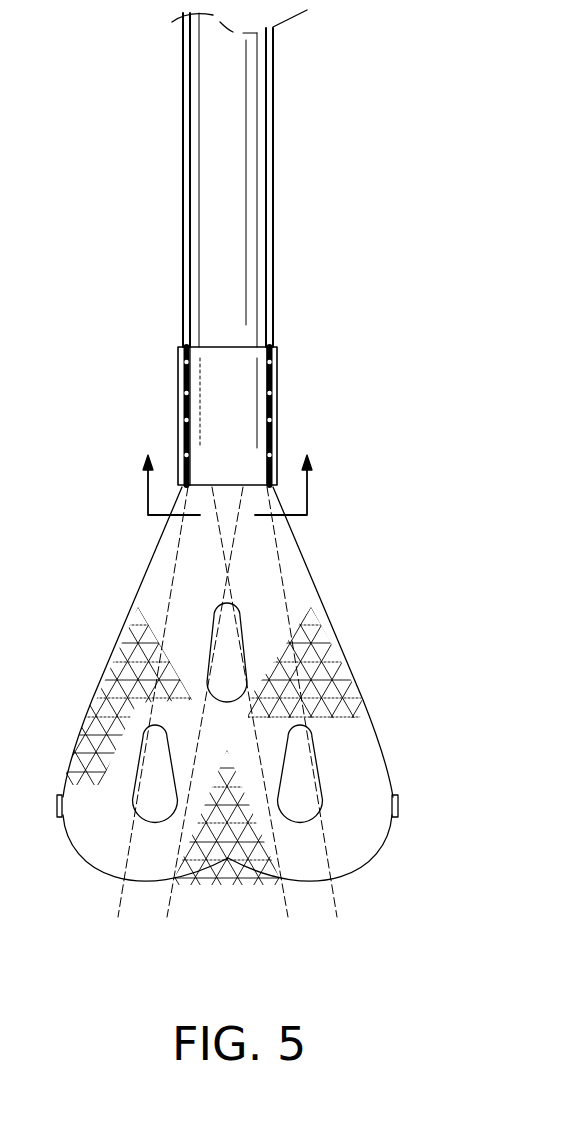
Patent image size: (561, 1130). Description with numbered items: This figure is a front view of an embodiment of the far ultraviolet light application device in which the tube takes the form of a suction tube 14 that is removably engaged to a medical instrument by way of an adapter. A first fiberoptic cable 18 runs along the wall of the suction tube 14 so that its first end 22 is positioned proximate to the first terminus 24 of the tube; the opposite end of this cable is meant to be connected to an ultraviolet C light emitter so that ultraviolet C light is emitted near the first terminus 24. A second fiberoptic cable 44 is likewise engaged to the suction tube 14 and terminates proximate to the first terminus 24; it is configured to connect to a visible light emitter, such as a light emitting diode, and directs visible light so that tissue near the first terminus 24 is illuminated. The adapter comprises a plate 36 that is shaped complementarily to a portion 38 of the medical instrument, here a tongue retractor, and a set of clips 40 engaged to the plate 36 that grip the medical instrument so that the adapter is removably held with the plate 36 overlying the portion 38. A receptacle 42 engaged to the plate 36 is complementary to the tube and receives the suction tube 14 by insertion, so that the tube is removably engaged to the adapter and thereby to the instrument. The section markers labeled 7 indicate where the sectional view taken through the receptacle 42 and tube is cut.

The section line of FIG. 7 is at (229, 483).
The suction tube 14 is at (230, 125).
The first fiberoptic cable 18 is at (273, 205).
The first end 22 is at (270, 490).
The first terminus 24 is at (225, 487).
The plate 36 is at (243, 592).
The portion 38 is at (215, 732).
The set of clips 40 is at (388, 828).
The receptacle 42 is at (233, 402).
The second fiberoptic cable 44 is at (172, 210).